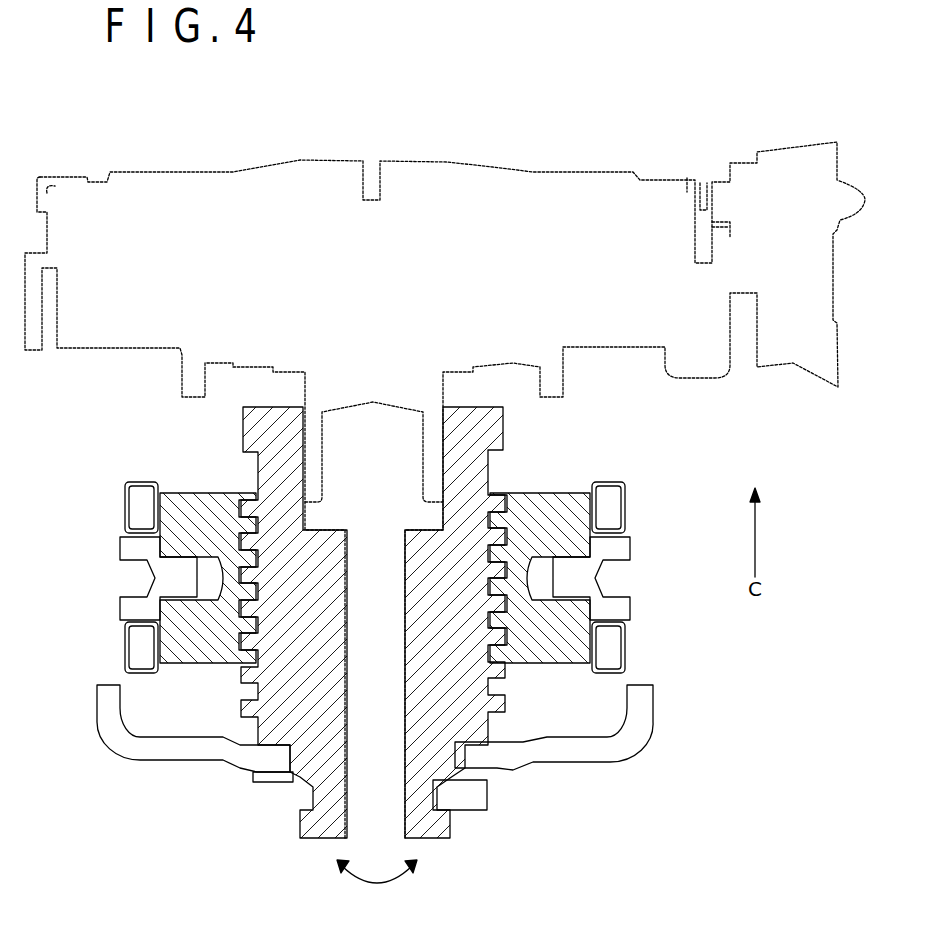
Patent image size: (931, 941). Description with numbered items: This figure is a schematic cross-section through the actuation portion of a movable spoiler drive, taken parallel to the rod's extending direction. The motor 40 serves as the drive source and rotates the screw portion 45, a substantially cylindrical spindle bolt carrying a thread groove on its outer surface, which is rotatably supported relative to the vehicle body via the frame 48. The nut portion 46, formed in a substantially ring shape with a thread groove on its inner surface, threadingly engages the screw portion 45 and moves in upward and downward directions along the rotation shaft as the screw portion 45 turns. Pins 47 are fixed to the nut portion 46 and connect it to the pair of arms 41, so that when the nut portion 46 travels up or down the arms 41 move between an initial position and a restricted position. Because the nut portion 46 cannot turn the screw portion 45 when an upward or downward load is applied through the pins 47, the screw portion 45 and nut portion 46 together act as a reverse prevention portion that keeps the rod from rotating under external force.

The motor 40 is at (447, 162).
The arm 41 is at (125, 492).
The screw portion 45 is at (243, 444).
The nut portion 46 is at (540, 493).
The pin 47 is at (121, 593).
The frame 48 is at (100, 727).